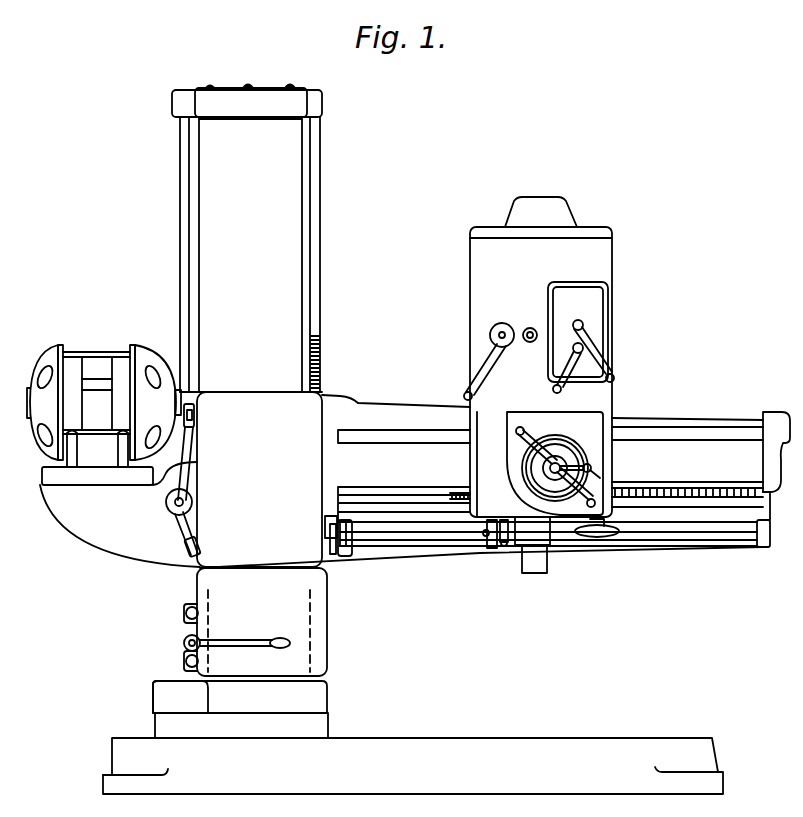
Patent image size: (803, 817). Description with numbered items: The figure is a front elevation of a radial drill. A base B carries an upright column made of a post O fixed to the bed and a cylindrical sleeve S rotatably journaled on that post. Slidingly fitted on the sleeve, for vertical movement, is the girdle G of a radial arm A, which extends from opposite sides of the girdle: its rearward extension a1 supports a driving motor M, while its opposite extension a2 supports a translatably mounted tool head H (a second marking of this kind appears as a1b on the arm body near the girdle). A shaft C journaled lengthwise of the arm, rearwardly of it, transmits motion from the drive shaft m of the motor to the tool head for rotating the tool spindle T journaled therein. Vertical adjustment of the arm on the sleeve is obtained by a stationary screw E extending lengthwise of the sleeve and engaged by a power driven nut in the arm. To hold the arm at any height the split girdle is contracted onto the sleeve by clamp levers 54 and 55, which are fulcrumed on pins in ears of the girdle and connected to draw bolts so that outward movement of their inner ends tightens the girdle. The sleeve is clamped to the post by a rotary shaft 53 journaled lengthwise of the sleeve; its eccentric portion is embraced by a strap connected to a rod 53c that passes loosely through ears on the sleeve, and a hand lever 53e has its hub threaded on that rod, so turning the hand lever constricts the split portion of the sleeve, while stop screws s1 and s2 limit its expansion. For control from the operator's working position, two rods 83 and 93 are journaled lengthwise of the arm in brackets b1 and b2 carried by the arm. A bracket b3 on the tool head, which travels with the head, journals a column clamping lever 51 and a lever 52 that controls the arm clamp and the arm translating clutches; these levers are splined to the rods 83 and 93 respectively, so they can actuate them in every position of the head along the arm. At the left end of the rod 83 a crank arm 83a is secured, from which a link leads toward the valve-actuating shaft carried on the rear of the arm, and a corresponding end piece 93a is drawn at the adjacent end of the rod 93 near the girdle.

The cylindrical sleeve S is at (247, 239).
The stationary screw E is at (321, 273).
The rotary shaft 53 is at (188, 275).
The girdle G is at (259, 479).
The driving motor M is at (102, 347).
The drive shaft m is at (180, 396).
The clamp lever 54 is at (190, 465).
The clamp lever 55 is at (185, 520).
The rearward extension a1 is at (120, 514).
The post O is at (327, 697).
The stop screw s1 is at (184, 612).
The rod 53c is at (184, 643).
The stop screw s2 is at (184, 664).
The hand lever 53e is at (242, 640).
The base B is at (413, 766).
The radial arm A is at (350, 565).
The opposite extension a2 is at (687, 462).
The arm shaft C is at (750, 408).
The bracket b2 is at (770, 547).
The rod 83 is at (398, 535).
The rod 93 is at (440, 547).
The rod bracket 93a is at (330, 525).
The bracket b1 is at (330, 548).
The crank arm 83a is at (340, 525).
The arm face a1b is at (409, 464).
The tool head H is at (541, 371).
The tool spindle T is at (547, 568).
The column clamping lever 51 is at (490, 548).
The lever 52 is at (504, 546).
The bracket b3 is at (486, 536).